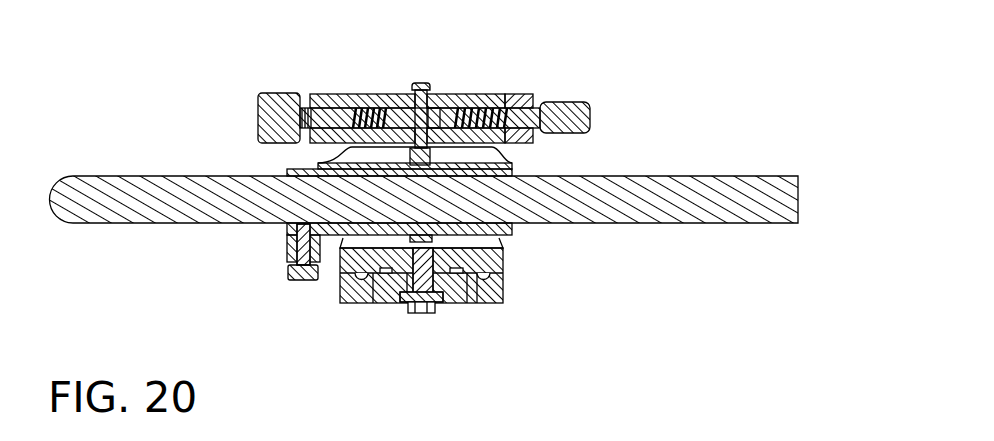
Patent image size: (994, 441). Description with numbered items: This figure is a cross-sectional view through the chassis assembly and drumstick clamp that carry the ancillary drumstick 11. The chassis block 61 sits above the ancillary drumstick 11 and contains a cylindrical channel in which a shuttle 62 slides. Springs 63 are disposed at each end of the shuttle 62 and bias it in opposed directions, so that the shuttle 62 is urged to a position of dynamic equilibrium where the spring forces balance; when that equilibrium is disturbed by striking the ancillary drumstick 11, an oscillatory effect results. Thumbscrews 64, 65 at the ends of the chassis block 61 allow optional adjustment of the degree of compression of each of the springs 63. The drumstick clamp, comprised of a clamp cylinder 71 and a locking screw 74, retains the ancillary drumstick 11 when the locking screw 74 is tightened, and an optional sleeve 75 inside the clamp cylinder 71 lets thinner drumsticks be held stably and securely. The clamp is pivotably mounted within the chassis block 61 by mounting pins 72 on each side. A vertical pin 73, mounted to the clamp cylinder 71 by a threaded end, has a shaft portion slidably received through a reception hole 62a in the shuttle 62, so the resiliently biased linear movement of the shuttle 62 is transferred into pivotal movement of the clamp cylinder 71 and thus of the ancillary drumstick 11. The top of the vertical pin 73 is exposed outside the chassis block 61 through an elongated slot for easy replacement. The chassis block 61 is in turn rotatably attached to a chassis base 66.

The ancillary drumstick 11 is at (125, 208).
The clamp cylinder 71 is at (300, 169).
The chassis block 61 is at (398, 97).
The shuttle 62 is at (440, 113).
The reception hole 62a is at (428, 97).
The springs 63 is at (358, 108).
The thumbscrew 64 is at (578, 112).
The thumbscrew 65 is at (262, 100).
The vertical pin 73 is at (432, 93).
The sleeve 75 is at (247, 227).
The locking screw 74 is at (293, 280).
The chassis base 66 is at (505, 290).
The mounting pins 72 is at (423, 313).